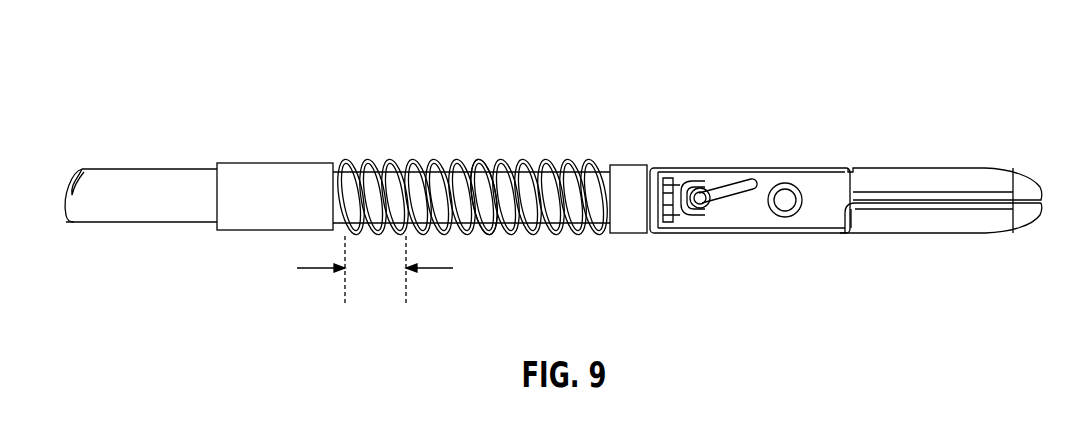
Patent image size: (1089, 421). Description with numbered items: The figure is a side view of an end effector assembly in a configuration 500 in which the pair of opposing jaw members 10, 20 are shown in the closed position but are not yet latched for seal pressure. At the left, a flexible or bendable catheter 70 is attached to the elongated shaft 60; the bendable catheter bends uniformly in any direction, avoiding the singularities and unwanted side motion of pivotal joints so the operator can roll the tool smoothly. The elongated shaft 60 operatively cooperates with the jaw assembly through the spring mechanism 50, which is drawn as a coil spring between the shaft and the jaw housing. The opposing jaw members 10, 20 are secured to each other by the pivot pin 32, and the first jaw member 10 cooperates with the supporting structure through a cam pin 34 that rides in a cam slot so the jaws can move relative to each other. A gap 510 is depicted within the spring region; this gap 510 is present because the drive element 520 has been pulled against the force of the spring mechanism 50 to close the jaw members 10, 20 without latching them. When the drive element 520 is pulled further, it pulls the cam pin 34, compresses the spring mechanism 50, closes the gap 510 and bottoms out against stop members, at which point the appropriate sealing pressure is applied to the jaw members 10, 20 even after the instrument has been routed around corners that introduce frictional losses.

The configuration 500 is at (902, 72).
The flexible or bendable catheter 70 is at (168, 212).
The elongated shaft 60 is at (248, 230).
The spring mechanism 50 is at (485, 165).
The gap 510 is at (345, 147).
The drive element 520 is at (474, 166).
The cam pin 34 is at (698, 190).
The pivot pin 32 is at (786, 218).
The first jaw member 10 is at (1002, 170).
The second jaw member 20 is at (1005, 235).